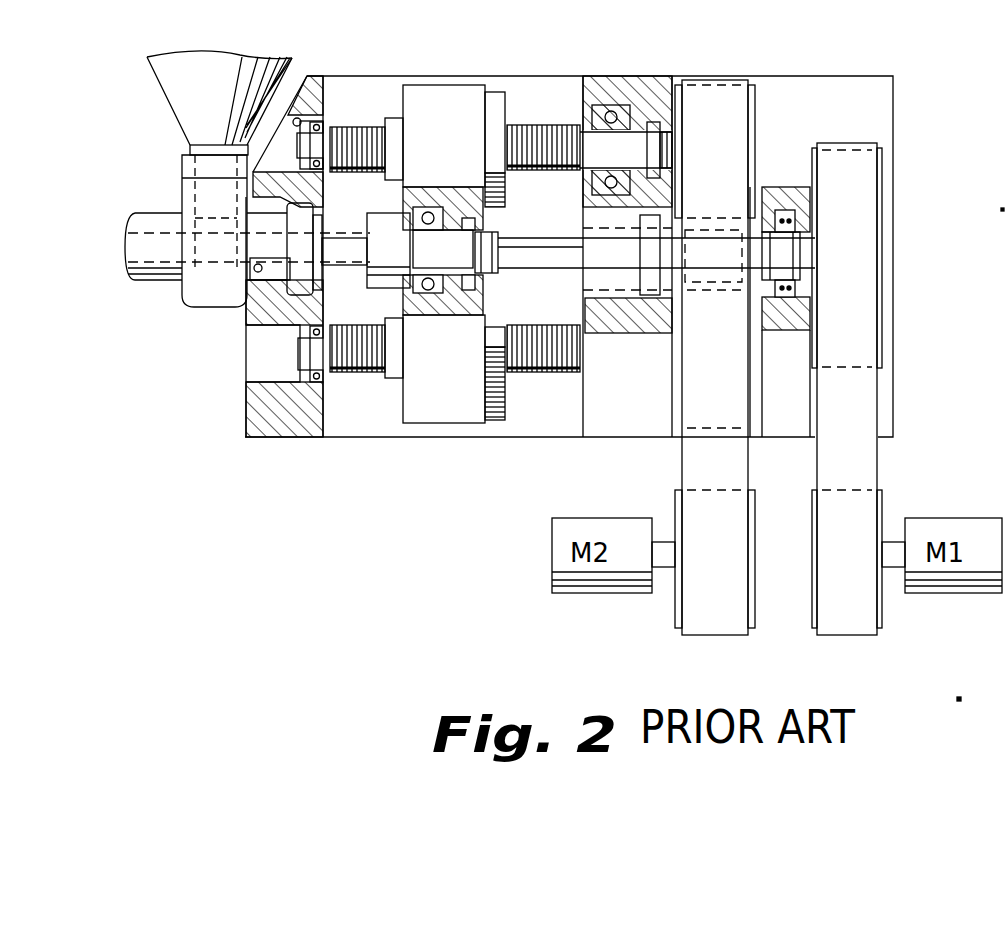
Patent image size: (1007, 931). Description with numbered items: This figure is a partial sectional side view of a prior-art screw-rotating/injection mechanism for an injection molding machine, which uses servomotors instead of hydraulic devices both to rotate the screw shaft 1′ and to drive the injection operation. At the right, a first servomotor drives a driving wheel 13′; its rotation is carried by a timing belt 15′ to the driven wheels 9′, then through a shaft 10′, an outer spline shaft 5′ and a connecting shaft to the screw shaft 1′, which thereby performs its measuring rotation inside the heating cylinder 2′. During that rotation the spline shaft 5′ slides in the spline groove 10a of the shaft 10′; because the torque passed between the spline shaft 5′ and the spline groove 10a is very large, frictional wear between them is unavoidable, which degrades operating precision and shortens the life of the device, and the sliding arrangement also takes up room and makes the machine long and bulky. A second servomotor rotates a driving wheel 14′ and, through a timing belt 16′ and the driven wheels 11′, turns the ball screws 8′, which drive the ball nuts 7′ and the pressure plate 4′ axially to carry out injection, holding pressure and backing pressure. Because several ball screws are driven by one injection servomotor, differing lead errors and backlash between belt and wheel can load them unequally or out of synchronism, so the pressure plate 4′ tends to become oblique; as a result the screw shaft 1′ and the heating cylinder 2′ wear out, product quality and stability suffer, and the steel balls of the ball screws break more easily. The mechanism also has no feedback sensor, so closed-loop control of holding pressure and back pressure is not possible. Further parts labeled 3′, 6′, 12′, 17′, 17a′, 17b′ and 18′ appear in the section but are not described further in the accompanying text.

The screw shaft 1′ is at (342, 262).
The heating cylinder 2′ is at (150, 280).
The bearing 3′ is at (487, 225).
The pressure plate 4′ is at (452, 415).
The outer spline shaft 5′ is at (550, 268).
The nut 6′ is at (610, 298).
The ball nut 7′ is at (392, 120).
The ball screw 8′ is at (531, 118).
The driven wheel 9′ is at (883, 163).
The shaft 10′ is at (800, 223).
The spline groove 10a is at (707, 232).
The driven wheel 11′ is at (757, 100).
The shaft 12′ is at (603, 95).
The driving wheel 13′ is at (887, 527).
The driving wheel 14′ is at (753, 535).
The timing belt 15′ is at (880, 465).
The timing belt 16′ is at (740, 462).
The housing wall 17′ is at (295, 432).
The bearing 17a′ is at (260, 277).
The bearing 17b′ is at (305, 77).
The hopper 18′ is at (173, 112).